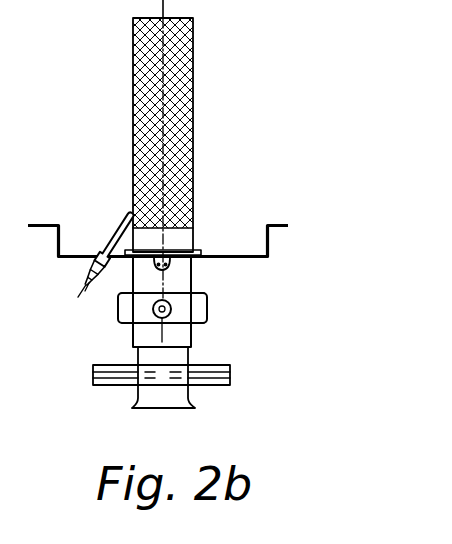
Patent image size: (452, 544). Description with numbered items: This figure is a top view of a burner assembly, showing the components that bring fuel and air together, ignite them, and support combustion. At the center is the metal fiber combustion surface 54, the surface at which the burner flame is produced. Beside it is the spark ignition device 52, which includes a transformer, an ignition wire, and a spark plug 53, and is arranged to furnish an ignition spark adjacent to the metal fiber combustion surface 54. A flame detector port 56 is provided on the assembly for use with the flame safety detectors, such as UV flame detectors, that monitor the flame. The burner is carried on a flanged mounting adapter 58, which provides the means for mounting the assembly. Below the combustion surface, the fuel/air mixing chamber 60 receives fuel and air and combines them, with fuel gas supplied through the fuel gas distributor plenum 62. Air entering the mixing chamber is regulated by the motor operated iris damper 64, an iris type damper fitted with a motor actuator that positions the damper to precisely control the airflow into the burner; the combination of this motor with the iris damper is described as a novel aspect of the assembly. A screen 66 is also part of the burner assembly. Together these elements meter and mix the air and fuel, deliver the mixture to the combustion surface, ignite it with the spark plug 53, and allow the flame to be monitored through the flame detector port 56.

The spark ignition device 52 is at (107, 245).
The spark plug 53 is at (86, 291).
The metal fiber combustion surface 54 is at (196, 138).
The flame detector port 56 is at (190, 267).
The flanged mounting adapter 58 is at (278, 229).
The fuel/air mixing chamber 60 is at (192, 282).
The fuel gas distributor plenum 62 is at (208, 313).
The motor operated iris damper 64 is at (93, 377).
The screen 66 is at (175, 408).